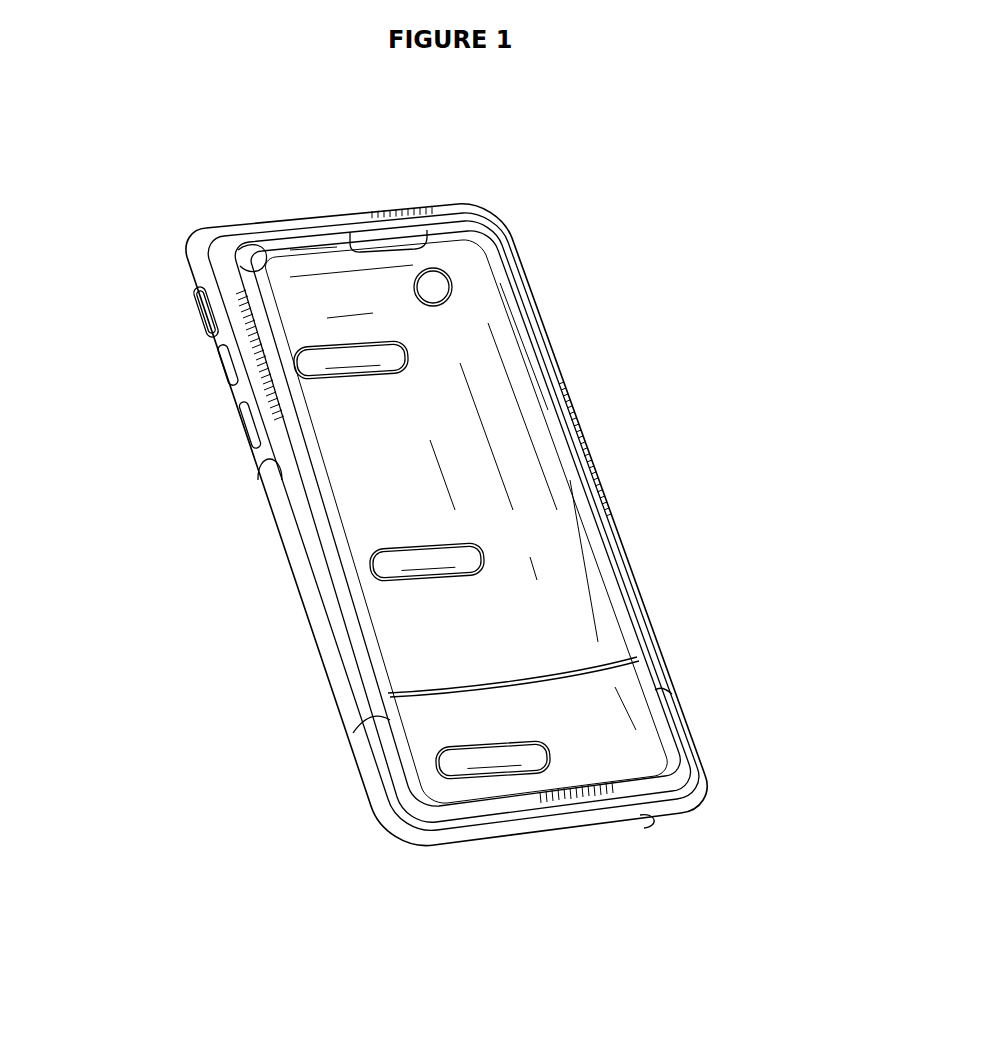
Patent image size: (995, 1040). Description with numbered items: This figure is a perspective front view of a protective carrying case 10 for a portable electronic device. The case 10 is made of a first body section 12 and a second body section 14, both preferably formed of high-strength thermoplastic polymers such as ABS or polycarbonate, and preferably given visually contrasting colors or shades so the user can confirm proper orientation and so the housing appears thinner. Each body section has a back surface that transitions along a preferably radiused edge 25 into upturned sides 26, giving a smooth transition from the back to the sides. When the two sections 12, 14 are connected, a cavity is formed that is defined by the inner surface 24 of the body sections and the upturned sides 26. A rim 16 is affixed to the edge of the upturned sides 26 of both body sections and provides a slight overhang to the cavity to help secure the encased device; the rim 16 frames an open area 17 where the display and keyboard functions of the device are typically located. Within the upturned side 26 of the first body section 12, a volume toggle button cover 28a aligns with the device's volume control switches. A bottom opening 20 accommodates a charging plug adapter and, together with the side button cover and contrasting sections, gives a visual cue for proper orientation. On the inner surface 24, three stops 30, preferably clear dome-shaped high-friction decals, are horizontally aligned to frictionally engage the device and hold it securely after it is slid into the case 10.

The protective carrying case 10 is at (517, 177).
The first body section 12 is at (277, 477).
The second body section 14 is at (372, 758).
The rim 16 is at (521, 283).
The open area 17 is at (455, 401).
The bottom opening 20 is at (560, 823).
The inner surface 24 is at (558, 633).
The edge 25 is at (398, 800).
The upturned sides 26 is at (332, 654).
The volume toggle button cover 28a is at (242, 427).
The stops 30 is at (487, 553).